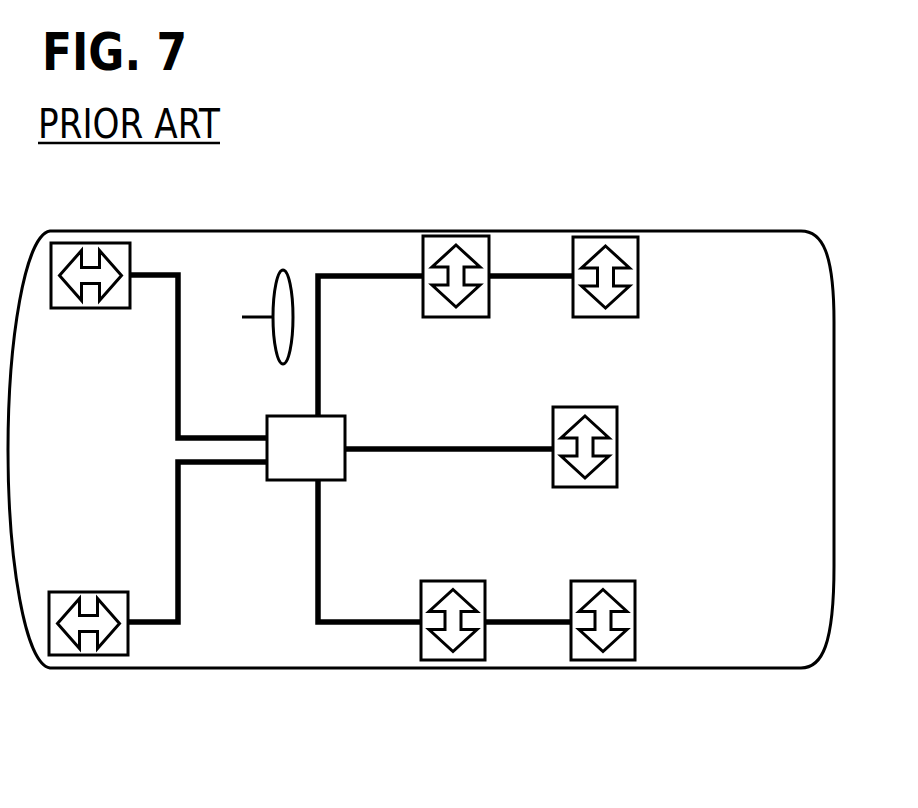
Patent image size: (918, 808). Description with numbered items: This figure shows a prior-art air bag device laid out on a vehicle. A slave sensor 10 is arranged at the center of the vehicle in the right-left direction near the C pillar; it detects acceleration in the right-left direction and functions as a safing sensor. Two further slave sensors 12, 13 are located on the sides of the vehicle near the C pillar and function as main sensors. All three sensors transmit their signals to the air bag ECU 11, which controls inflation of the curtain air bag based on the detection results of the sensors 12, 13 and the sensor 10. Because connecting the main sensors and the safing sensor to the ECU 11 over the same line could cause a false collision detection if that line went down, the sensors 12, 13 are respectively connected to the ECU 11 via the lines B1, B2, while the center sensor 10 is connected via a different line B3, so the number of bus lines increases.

The slave sensor 10 is at (597, 407).
The air bag ECU 11 is at (337, 425).
The slave sensor 12 is at (613, 236).
The slave sensor 13 is at (615, 662).
The line B1 is at (527, 275).
The line B2 is at (523, 620).
The line B3 is at (485, 445).